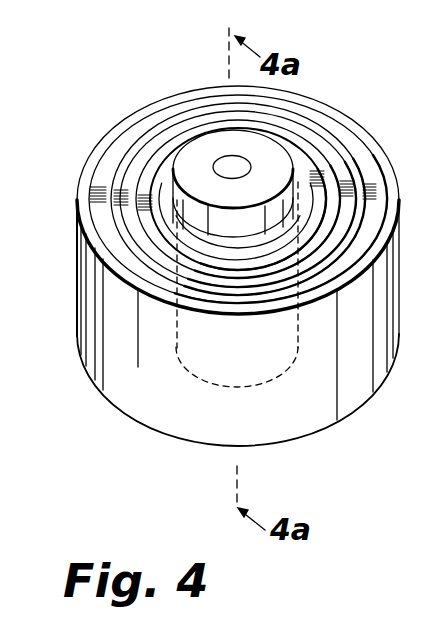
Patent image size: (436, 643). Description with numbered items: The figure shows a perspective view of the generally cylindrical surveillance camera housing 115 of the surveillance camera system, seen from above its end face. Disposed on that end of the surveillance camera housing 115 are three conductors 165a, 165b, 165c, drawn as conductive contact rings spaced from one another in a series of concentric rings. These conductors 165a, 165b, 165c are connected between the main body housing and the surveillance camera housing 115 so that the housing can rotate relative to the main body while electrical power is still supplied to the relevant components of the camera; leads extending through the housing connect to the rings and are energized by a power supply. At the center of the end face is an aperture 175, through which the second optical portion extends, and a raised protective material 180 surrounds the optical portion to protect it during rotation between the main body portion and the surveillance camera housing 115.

The surveillance camera housing 115 is at (400, 246).
The conductor 165a is at (362, 157).
The conductor 165b is at (333, 153).
The conductor 165c is at (305, 153).
The aperture 175 is at (220, 162).
The protective material 180 is at (185, 166).